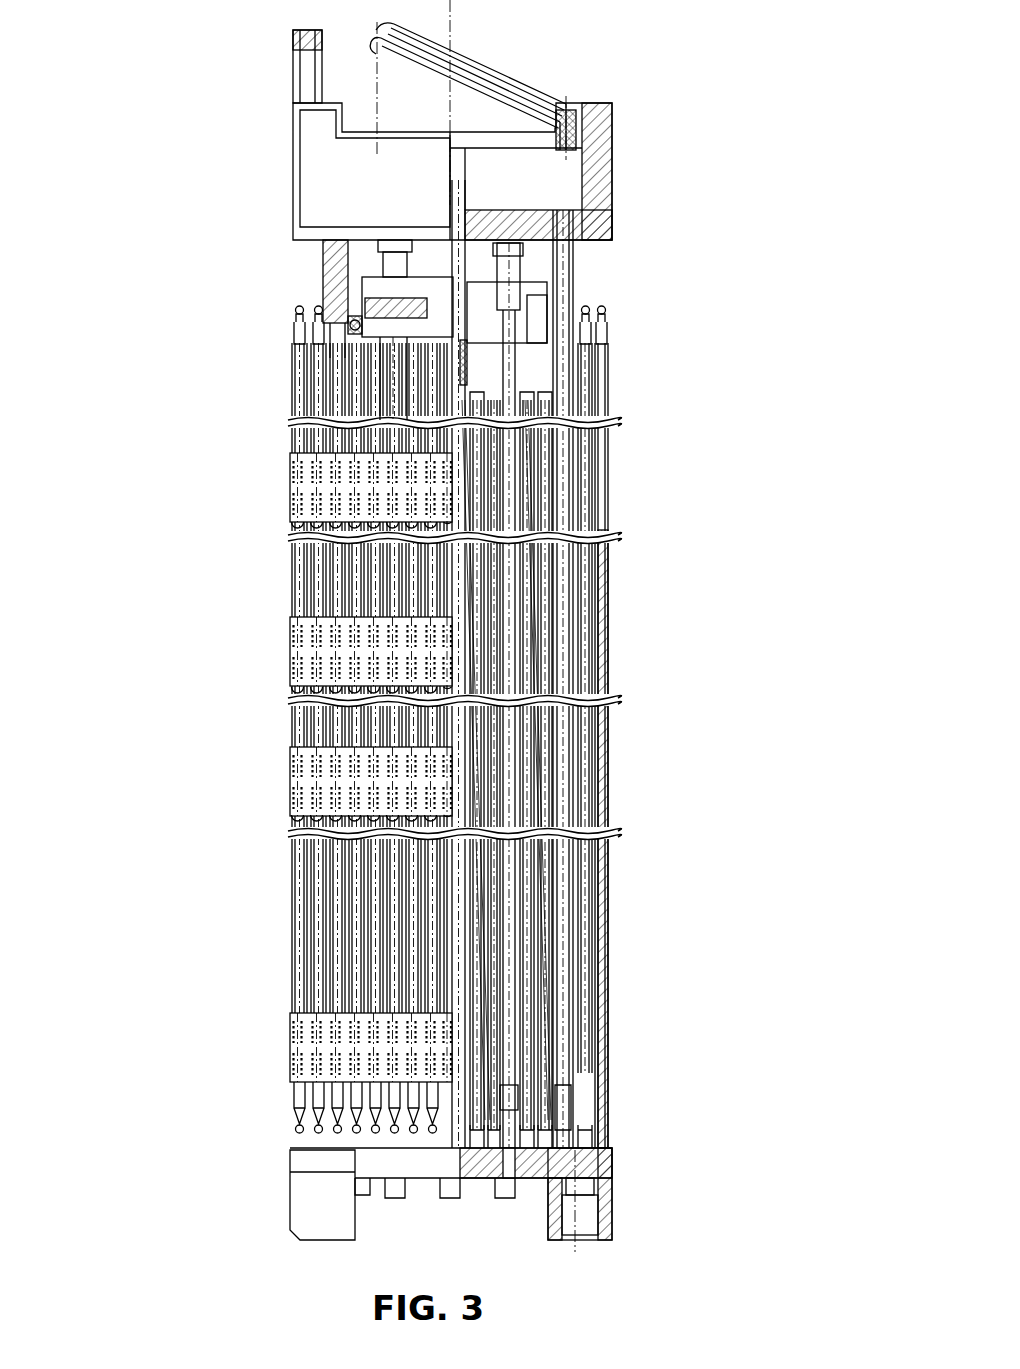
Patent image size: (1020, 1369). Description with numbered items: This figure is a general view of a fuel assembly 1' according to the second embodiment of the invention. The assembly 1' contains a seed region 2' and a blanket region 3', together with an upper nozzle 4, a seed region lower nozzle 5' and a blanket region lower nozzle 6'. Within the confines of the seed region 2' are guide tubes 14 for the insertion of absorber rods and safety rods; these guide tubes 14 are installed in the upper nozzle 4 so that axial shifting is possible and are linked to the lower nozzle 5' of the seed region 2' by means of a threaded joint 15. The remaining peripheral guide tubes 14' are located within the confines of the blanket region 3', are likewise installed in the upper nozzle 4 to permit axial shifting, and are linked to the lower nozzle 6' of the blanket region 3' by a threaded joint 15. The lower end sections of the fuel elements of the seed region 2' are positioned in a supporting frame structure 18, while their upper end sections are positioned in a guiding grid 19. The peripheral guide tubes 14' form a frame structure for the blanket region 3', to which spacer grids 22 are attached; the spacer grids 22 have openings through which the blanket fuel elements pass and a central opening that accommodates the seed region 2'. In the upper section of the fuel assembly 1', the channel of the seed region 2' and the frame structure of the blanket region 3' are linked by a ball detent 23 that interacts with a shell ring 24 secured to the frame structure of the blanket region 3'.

The fuel assembly 1' is at (308, 719).
The seed region 2' is at (601, 749).
The blanket region 3' is at (659, 727).
The upper nozzle 4 is at (420, 186).
The seed region lower nozzle 5' is at (516, 1114).
The blanket region lower nozzle 6' is at (645, 1180).
The guide tubes 14 is at (619, 690).
The peripheral guide tubes 14' is at (652, 654).
The threaded joint 15 is at (565, 1197).
The supporting frame structure 18 is at (540, 1125).
The guiding grid 19 is at (493, 460).
The spacer grids 22 is at (298, 1050).
The ball detent 23 is at (352, 325).
The shell ring 24 is at (337, 290).